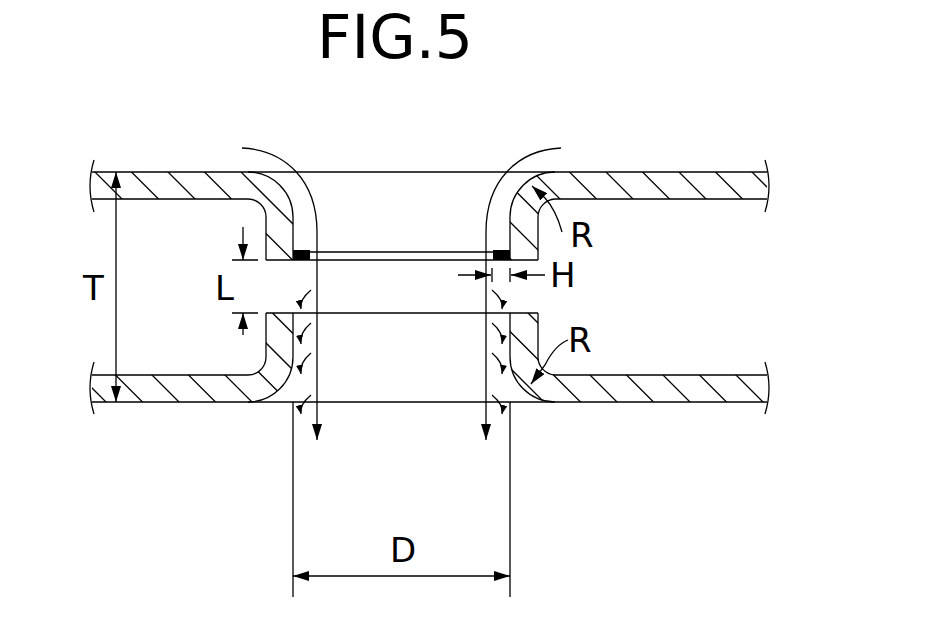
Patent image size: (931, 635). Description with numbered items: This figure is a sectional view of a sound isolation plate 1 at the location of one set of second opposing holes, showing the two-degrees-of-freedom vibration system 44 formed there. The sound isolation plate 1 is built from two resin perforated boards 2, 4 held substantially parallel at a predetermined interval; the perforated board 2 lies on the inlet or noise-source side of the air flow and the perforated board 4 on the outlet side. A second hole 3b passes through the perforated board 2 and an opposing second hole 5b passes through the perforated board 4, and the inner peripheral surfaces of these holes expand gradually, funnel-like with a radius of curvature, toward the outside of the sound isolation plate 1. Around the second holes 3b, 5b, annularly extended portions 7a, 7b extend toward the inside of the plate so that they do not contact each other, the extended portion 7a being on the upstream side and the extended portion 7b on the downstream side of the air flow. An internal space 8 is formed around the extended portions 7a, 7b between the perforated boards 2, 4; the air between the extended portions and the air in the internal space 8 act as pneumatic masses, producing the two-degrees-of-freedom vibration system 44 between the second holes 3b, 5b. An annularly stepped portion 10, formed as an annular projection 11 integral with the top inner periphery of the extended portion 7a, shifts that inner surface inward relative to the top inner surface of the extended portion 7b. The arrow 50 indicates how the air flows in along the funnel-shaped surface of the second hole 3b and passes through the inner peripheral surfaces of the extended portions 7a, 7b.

The sound isolation plate 1 is at (465, 262).
The perforated board 2 is at (429, 170).
The second hole 3b is at (362, 171).
The perforated board 4 is at (429, 394).
The second hole 5b is at (440, 403).
The annularly extended portion 7a is at (265, 228).
The annularly extended portion 7b is at (265, 350).
The internal space 8 is at (190, 307).
The annularly stepped portion 10 is at (304, 279).
The annular projection 11 is at (305, 247).
The two-degrees-of-freedom vibration system 44 is at (372, 412).
The arrow 50 is at (313, 393).